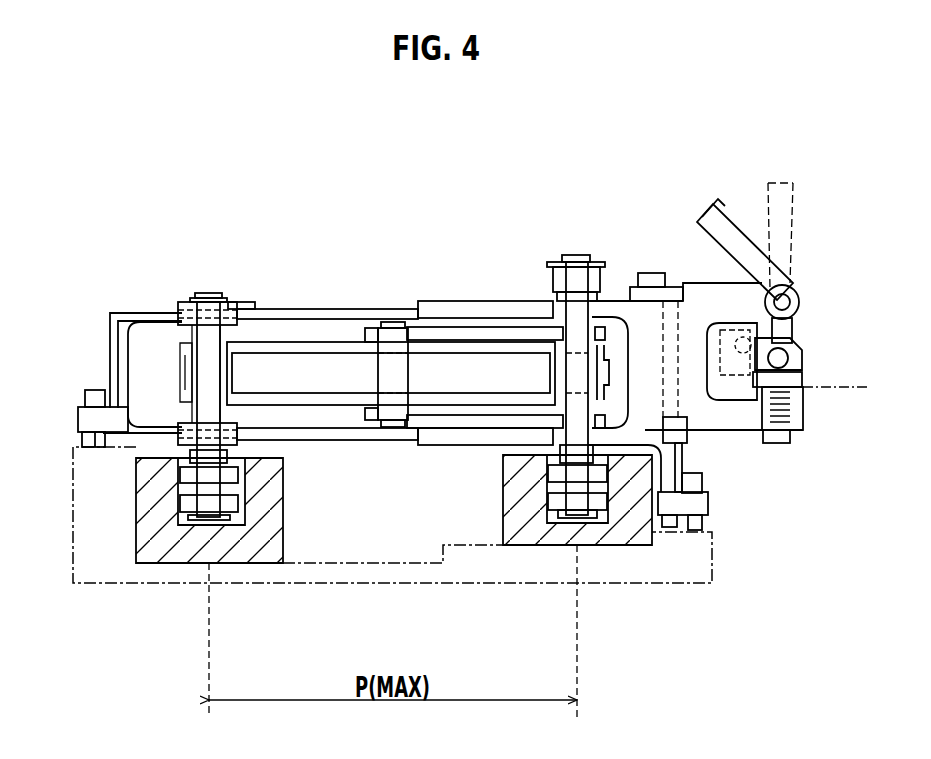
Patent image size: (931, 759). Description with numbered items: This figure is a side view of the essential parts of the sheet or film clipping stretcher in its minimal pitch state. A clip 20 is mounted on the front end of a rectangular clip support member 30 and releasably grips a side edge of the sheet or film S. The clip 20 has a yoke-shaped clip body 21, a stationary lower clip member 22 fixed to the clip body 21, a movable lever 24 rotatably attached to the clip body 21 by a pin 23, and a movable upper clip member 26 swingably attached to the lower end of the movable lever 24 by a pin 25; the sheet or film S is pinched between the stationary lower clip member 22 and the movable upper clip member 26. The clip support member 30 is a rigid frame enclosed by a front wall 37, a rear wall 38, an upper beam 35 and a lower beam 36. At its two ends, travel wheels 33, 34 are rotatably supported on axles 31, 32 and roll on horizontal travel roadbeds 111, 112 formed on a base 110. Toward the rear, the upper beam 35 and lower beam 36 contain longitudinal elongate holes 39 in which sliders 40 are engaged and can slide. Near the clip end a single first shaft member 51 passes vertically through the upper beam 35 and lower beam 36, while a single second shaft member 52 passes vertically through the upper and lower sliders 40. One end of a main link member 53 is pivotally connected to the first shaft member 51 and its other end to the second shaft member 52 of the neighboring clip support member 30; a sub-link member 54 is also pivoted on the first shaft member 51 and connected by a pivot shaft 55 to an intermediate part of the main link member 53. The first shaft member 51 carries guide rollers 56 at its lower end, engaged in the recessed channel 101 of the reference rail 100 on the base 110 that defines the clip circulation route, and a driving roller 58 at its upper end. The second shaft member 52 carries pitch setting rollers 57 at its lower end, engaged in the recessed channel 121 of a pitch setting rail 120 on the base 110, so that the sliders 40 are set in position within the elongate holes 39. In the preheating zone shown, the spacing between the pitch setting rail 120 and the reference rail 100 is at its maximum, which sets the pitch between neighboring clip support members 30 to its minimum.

The clip 20 is at (758, 325).
The clip body 21 is at (705, 290).
The stationary lower clip member 22 is at (790, 397).
The pin 23 is at (800, 300).
The movable lever 24 is at (790, 330).
The pin 25 is at (790, 357).
The movable upper clip member 26 is at (803, 380).
The clip support member 30 is at (366, 362).
The axle 31 is at (708, 500).
The axle 32 is at (90, 420).
The travel wheel 33 is at (700, 478).
The travel wheel 34 is at (86, 398).
The upper beam 35 is at (433, 302).
The lower beam 36 is at (435, 446).
The front wall 37 is at (677, 437).
The rear wall 38 is at (118, 340).
The elongate hole 39 is at (293, 309).
The slider 40 is at (232, 302).
The first shaft member 51 is at (577, 272).
The second shaft member 52 is at (212, 293).
The main link member 53 is at (338, 342).
The sub-link member 54 is at (472, 330).
The pivot shaft 55 is at (396, 427).
The guide roller 56 is at (555, 500).
The pitch setting roller 57 is at (235, 502).
The driving roller 58 is at (598, 275).
The sheet or film S is at (847, 400).
The reference rail 100 is at (540, 540).
The recessed channel 101 is at (600, 520).
The base 110 is at (716, 570).
The travel roadbed 111 is at (702, 522).
The travel roadbed 112 is at (80, 443).
The pitch setting rail 120 is at (165, 555).
The recessed channel 121 is at (240, 517).